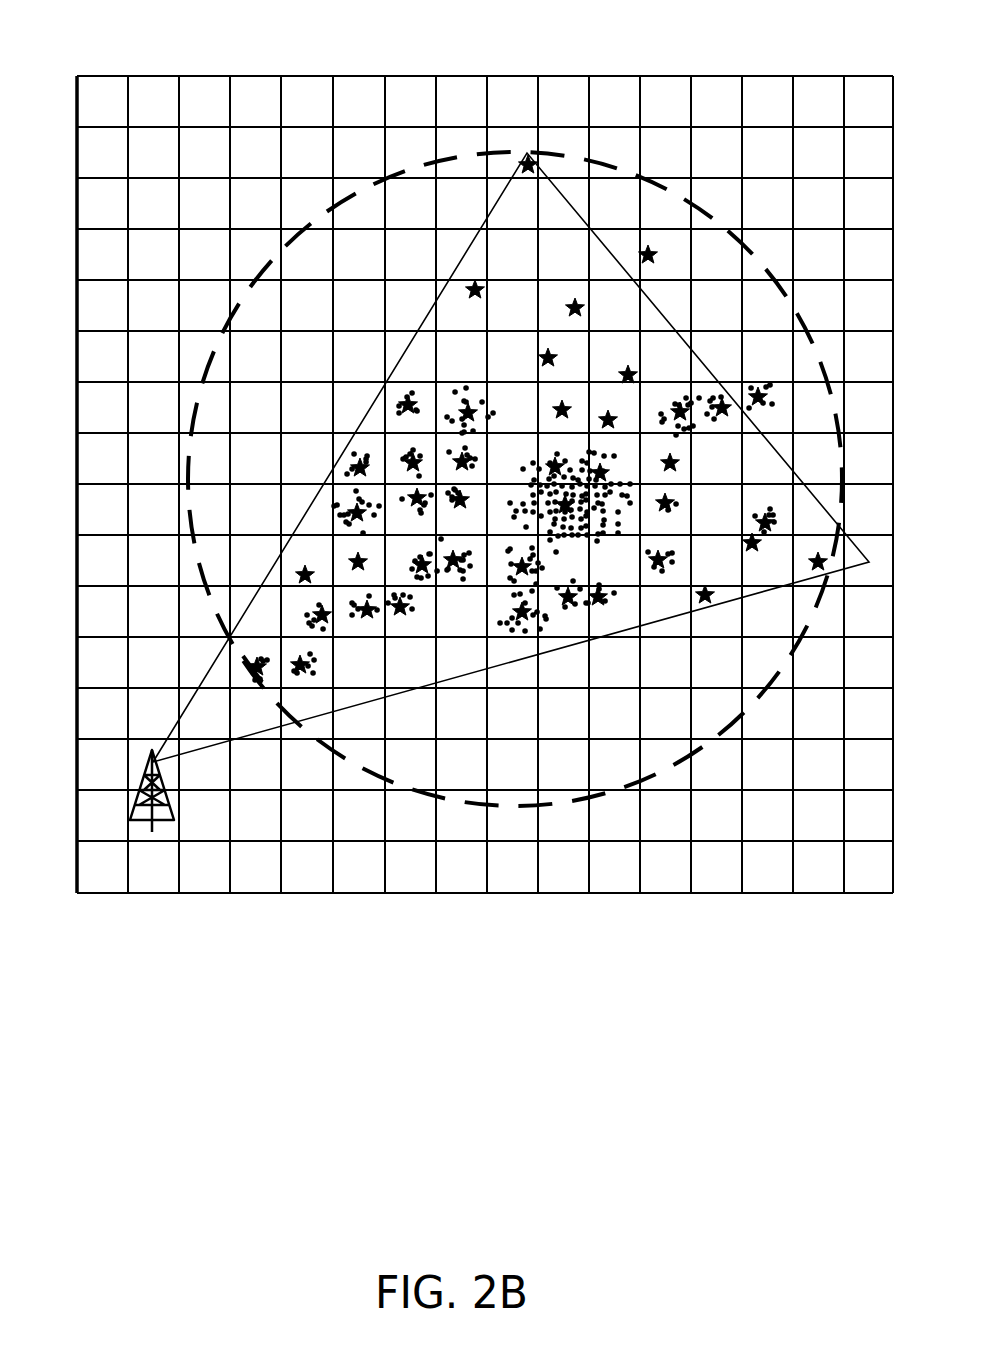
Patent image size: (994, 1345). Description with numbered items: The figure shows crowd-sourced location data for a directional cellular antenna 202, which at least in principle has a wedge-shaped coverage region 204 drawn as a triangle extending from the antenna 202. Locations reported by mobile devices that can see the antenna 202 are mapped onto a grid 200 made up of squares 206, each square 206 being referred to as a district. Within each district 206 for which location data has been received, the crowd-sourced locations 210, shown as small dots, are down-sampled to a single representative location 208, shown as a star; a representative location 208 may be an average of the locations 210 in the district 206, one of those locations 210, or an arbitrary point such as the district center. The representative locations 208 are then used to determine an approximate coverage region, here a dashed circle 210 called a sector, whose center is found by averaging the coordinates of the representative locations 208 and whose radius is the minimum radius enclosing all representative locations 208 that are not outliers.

The grid 200 is at (454, 52).
The antenna 202 is at (158, 820).
The coverage region 204 is at (423, 318).
The square 206 is at (372, 679).
The representative location 208 is at (460, 614).
The crowd-sourced location 210 is at (265, 262).